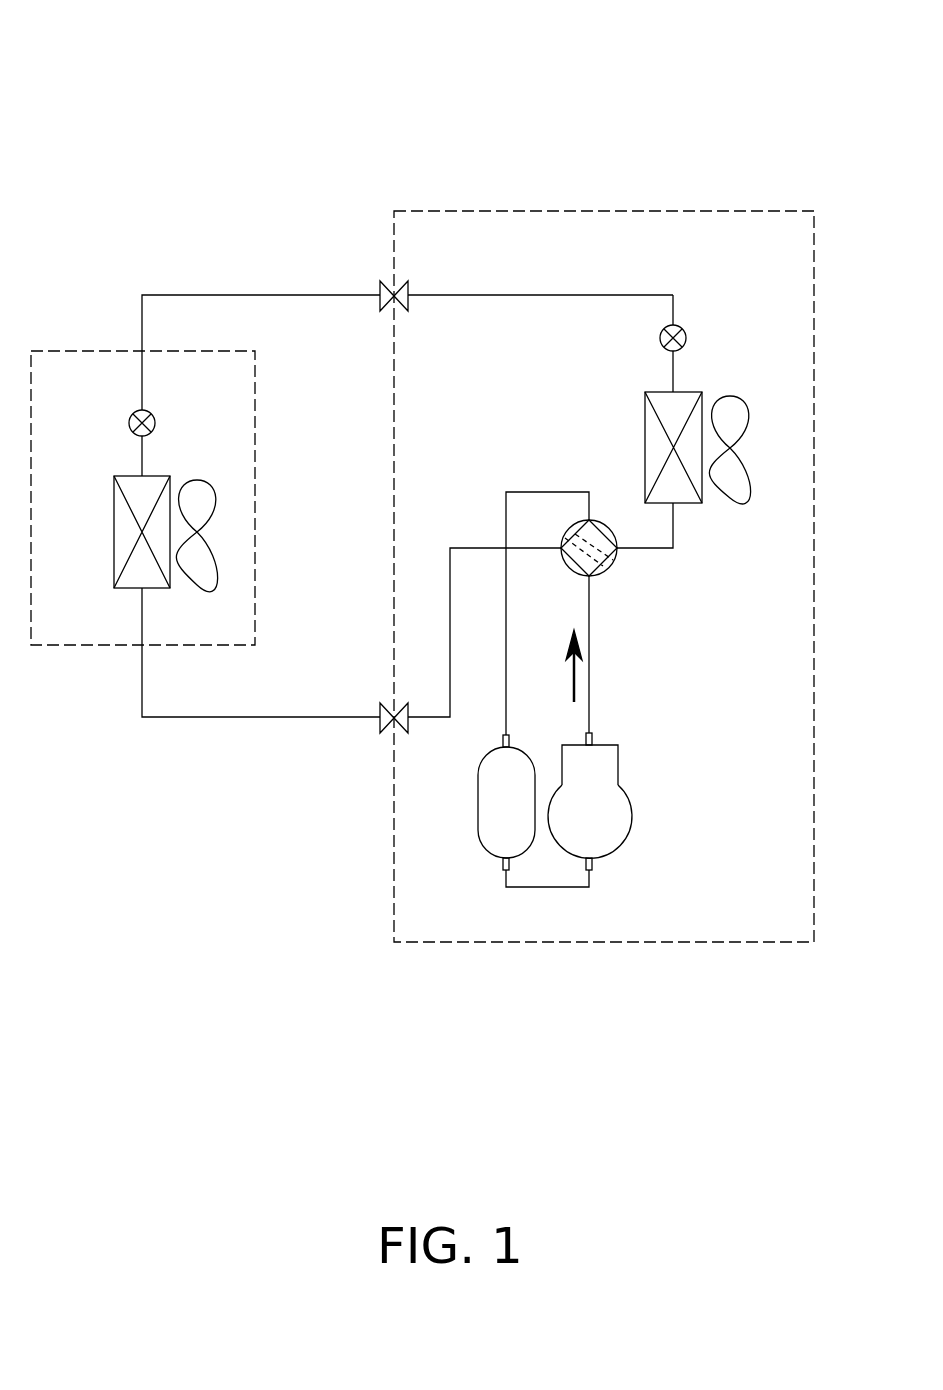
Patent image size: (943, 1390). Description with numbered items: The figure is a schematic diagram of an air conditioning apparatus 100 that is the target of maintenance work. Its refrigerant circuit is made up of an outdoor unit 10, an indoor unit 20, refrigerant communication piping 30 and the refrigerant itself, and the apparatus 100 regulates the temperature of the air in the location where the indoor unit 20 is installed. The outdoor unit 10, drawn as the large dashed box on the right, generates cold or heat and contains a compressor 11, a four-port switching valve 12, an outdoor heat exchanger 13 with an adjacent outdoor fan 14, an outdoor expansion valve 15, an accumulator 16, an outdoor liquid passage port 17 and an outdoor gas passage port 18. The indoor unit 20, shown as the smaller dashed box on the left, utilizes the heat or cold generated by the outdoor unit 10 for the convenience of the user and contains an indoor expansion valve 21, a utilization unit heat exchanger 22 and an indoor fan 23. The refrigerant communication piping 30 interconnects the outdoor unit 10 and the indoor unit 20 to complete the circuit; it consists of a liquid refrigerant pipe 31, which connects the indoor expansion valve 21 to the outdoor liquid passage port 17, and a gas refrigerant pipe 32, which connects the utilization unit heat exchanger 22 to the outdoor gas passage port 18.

The air conditioning apparatus 100 is at (169, 100).
The outdoor unit 10 is at (450, 210).
The compressor 11 is at (632, 815).
The four-port switching valve 12 is at (569, 569).
The outdoor heat exchanger 13 is at (637, 462).
The outdoor fan 14 is at (748, 480).
The outdoor expansion valve 15 is at (687, 338).
The accumulator 16 is at (478, 803).
The outdoor liquid passage port 17 is at (385, 312).
The outdoor gas passage port 18 is at (388, 702).
The indoor unit 20 is at (59, 350).
The indoor expansion valve 21 is at (129, 423).
The utilization unit heat exchanger 22 is at (114, 530).
The indoor fan 23 is at (200, 585).
The refrigerant communication piping 30 is at (283, 210).
The liquid refrigerant pipe 31 is at (176, 720).
The gas refrigerant pipe 32 is at (206, 295).